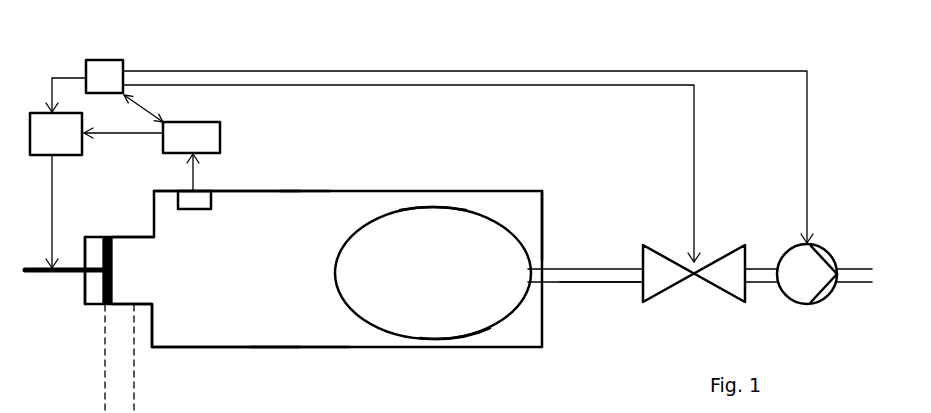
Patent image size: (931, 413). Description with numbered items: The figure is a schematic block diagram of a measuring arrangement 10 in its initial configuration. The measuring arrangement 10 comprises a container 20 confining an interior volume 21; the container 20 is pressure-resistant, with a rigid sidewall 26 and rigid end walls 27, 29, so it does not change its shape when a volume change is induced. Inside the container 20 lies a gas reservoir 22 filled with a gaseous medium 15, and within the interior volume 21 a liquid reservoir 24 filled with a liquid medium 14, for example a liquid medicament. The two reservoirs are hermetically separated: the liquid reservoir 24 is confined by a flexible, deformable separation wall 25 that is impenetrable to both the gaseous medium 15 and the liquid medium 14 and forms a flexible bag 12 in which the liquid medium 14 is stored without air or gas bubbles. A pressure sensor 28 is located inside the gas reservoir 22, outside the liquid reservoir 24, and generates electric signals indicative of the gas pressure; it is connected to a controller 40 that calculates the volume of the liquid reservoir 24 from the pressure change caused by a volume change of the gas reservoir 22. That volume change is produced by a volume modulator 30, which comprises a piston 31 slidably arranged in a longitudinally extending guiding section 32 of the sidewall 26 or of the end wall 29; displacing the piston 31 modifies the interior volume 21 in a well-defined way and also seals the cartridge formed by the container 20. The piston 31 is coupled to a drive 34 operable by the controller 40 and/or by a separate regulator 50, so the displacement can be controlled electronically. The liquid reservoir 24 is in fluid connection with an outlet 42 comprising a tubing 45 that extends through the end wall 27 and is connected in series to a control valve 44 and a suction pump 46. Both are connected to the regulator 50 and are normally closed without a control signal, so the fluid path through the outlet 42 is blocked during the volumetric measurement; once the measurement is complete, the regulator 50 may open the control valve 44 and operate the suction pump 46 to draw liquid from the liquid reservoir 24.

The measuring arrangement 10 is at (715, 60).
The flexible bag 12 is at (473, 210).
The liquid medium 14 is at (460, 322).
The gaseous medium 15 is at (290, 323).
The container 20 is at (330, 180).
The interior volume 21 is at (303, 212).
The gas reservoir 22 is at (280, 258).
The liquid reservoir 24 is at (427, 278).
The separation wall 25 is at (425, 207).
The sidewall 26 is at (276, 190).
The end wall 27 is at (543, 220).
The pressure sensor 28 is at (203, 210).
The end wall 29 is at (153, 322).
The volume modulator 30 is at (107, 220).
The piston 31 is at (113, 278).
The guiding section 32 is at (126, 234).
The drive 34 is at (40, 147).
The controller 40 is at (209, 143).
The outlet 42 is at (568, 292).
The control valve 44 is at (657, 300).
The tubing 45 is at (603, 277).
The suction pump 46 is at (812, 303).
The regulator 50 is at (108, 62).